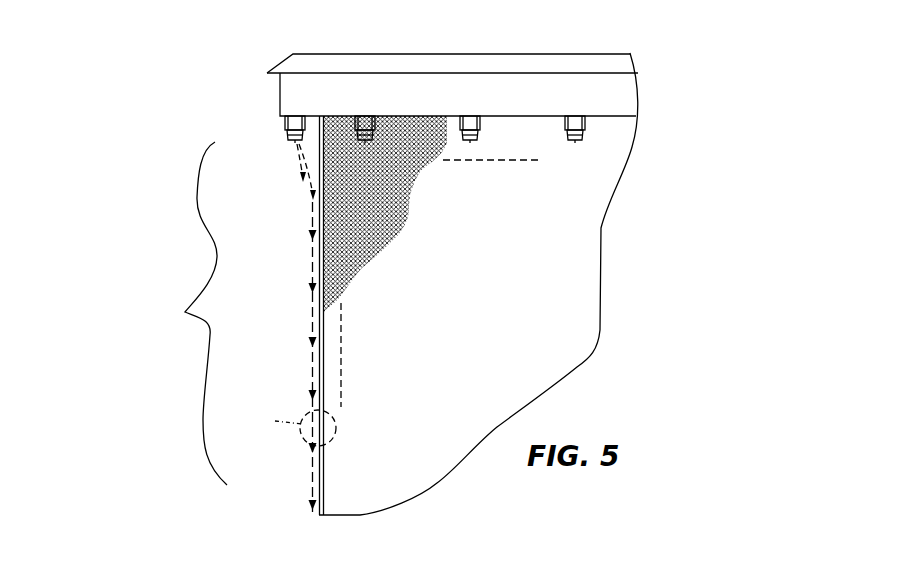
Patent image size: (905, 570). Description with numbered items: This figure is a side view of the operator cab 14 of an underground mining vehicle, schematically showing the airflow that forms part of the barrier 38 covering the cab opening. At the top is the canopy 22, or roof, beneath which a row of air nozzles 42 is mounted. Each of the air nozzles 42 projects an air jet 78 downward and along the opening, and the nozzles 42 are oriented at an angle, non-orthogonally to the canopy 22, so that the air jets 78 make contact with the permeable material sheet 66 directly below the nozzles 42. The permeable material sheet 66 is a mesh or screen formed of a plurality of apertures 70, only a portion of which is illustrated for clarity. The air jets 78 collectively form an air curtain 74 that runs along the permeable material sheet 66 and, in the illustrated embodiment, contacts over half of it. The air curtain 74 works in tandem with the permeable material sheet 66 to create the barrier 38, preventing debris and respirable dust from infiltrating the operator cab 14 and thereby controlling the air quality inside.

The operator cab 14 is at (110, 133).
The canopy 22 is at (540, 66).
The air nozzles 42 is at (297, 123).
The permeable material sheet 66 is at (383, 217).
The apertures 70 is at (385, 214).
The air jets 78 is at (280, 168).
The barrier 38 is at (175, 210).
The air curtain 74 is at (183, 313).